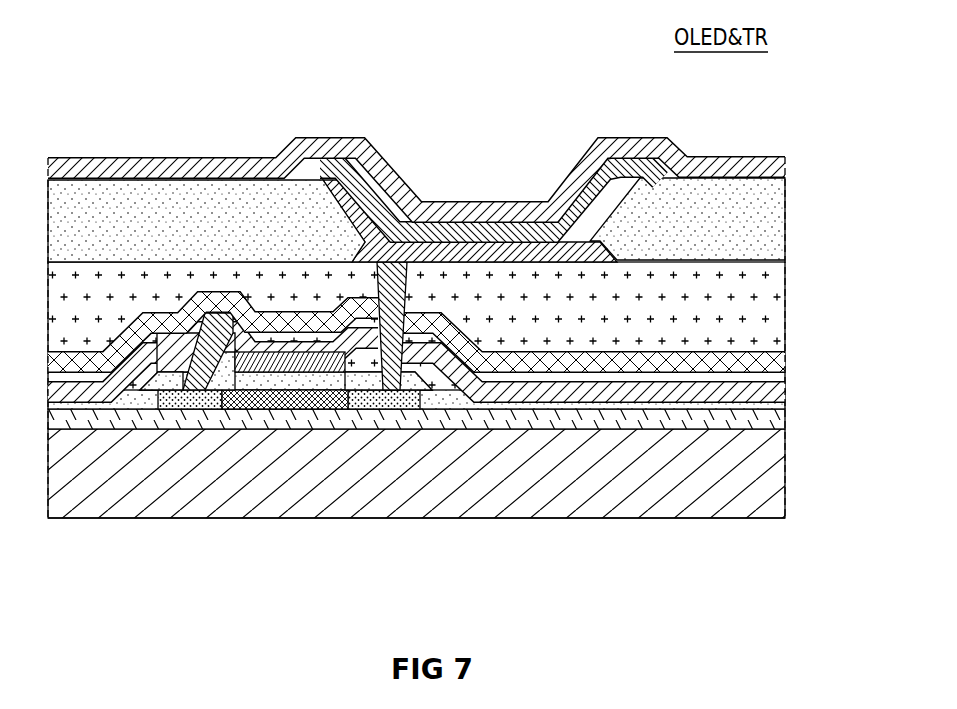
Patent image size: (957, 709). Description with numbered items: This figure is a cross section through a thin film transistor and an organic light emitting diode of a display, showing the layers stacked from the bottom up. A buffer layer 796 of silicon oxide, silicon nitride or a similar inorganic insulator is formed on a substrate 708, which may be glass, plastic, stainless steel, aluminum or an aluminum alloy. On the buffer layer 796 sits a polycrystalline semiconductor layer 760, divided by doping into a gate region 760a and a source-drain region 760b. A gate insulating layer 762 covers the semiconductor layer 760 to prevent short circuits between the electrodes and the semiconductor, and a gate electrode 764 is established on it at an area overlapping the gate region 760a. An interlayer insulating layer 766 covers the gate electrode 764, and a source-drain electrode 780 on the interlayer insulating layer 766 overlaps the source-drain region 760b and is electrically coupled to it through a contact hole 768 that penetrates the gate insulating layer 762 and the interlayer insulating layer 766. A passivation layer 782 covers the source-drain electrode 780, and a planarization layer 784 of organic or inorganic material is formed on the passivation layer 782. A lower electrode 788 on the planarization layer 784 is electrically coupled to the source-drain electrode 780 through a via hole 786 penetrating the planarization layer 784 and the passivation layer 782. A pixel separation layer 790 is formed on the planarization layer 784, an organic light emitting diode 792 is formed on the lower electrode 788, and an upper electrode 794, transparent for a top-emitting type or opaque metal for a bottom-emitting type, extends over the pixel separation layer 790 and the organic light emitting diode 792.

The substrate 708 is at (787, 465).
The buffer layer 796 is at (787, 428).
The semiconductor layer 760 is at (299, 501).
The gate region 760a is at (330, 410).
The source-drain region 760b is at (400, 410).
The gate insulating layer 762 is at (787, 400).
The gate electrode 764 is at (272, 375).
The interlayer insulating layer 766 is at (787, 372).
The contact hole 768 is at (202, 395).
The source-drain electrode 780 is at (150, 353).
The passivation layer 782 is at (787, 342).
The planarization layer 784 is at (787, 298).
The via hole 786 is at (428, 330).
The lower electrode 788 is at (480, 250).
The pixel separation layer 790 is at (787, 220).
The organic light emitting diode 792 is at (630, 165).
The upper electrode 794 is at (565, 172).